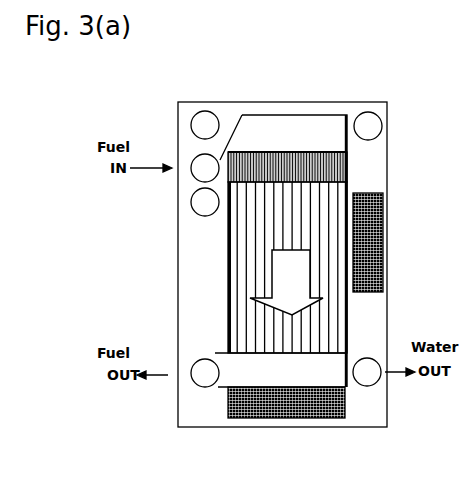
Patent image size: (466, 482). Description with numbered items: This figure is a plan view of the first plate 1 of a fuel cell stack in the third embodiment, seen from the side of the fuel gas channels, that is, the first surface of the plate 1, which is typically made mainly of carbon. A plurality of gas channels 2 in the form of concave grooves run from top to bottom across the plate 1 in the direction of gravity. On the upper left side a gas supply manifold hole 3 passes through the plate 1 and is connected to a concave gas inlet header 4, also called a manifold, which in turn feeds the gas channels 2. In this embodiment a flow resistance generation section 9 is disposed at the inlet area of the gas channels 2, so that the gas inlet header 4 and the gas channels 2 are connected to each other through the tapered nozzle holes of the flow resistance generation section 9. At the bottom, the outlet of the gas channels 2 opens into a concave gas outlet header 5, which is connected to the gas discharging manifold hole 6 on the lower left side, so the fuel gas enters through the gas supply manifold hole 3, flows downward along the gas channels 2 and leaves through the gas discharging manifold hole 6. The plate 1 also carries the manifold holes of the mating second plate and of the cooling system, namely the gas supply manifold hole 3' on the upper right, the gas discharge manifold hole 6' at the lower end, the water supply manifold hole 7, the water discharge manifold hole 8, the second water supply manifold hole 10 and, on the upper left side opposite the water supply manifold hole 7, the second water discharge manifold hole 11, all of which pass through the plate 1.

The plate 1 is at (378, 318).
The gas channels 2 is at (353, 212).
The gas supply manifold hole 3 is at (176, 189).
The gas supply manifold hole 3' is at (392, 242).
The gas inlet header 4 is at (310, 128).
The gas outlet header 5 is at (322, 380).
The gas discharging manifold hole 6 is at (173, 393).
The gas discharge manifold hole 6' is at (269, 432).
The water supply manifold hole 7 is at (378, 112).
The water discharge manifold hole 8 is at (372, 385).
The flow resistance generation section 9 is at (338, 167).
The second water supply manifold hole 10 is at (194, 213).
The second water discharge manifold hole 11 is at (200, 117).